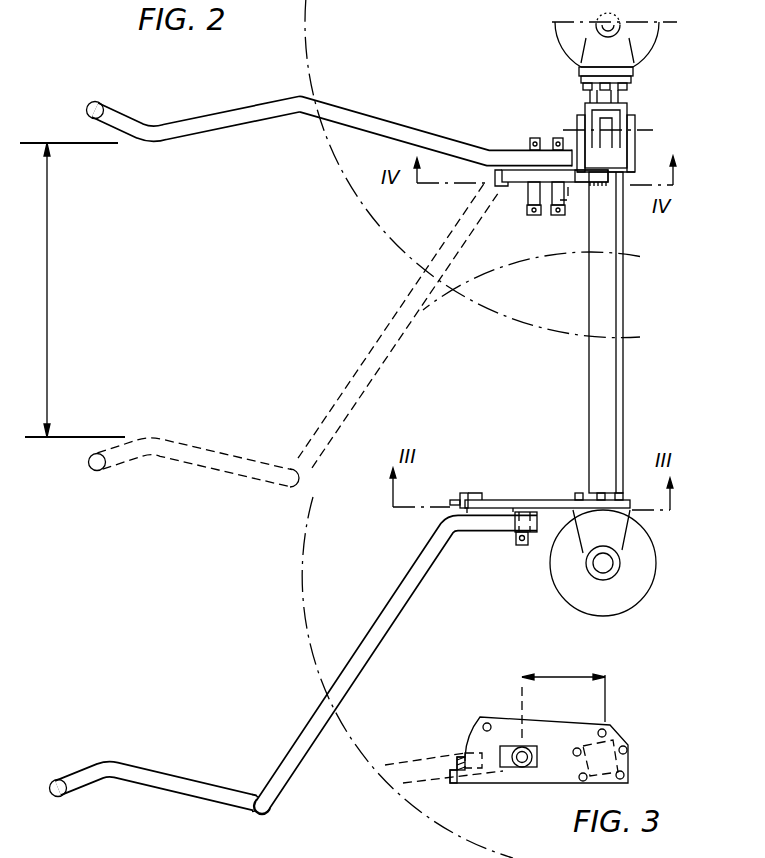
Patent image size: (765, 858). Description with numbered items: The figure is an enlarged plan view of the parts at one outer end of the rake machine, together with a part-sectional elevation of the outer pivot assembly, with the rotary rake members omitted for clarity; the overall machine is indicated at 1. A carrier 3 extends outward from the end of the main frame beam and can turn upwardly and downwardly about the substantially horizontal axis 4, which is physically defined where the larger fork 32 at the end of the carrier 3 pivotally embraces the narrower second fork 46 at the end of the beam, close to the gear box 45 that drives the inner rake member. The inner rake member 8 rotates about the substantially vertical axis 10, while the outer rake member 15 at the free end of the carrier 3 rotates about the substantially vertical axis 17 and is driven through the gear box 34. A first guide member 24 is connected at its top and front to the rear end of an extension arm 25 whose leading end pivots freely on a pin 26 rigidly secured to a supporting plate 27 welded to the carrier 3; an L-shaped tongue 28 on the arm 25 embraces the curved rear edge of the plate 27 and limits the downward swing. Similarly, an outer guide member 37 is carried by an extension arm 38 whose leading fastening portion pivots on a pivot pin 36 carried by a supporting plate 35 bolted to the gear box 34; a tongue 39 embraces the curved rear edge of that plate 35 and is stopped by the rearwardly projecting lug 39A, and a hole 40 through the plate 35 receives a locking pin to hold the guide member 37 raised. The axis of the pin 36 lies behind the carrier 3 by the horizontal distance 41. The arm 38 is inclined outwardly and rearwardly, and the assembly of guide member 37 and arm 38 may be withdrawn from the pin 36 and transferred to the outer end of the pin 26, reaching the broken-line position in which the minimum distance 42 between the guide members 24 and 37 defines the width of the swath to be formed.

In FIG. 2, the apparatus 1 is at (641, 377).
In FIG. 2, the carrier 3 is at (596, 392).
In FIG. 3, the carrier 3 is at (628, 740).
In FIG. 2, the substantially horizontal axis 4 is at (640, 131).
In FIG. 2, the rake member 8 is at (382, 238).
In FIG. 2, the substantially vertical axis 10 is at (608, 24).
In FIG. 2, the rake member 15 is at (308, 641).
In FIG. 2, the substantially vertical axis 17 is at (600, 566).
In FIG. 2, the first guide member 24 is at (200, 138).
In FIG. 2, the extension arm 25 is at (385, 118).
In FIG. 2, the pin 26 is at (556, 140).
In FIG. 2, the supporting plate 27 is at (583, 186).
In FIG. 2, the tongue 28 is at (502, 186).
In FIG. 2, the fork 32 is at (640, 157).
In FIG. 2, the gear box 34 is at (633, 605).
In FIG. 2, the supporting plate 35 is at (562, 500).
In FIG. 3, the supporting plate 35 is at (572, 728).
In FIG. 2, the pivot pin 36 is at (522, 545).
In FIG. 3, the pivot pin 36 is at (522, 770).
In FIG. 2, the outer guide member 37 is at (166, 778).
In FIG. 2, the extension arm 38 is at (306, 731).
In FIG. 3, the extension arm 38 is at (402, 766).
In FIG. 2, the tongue 39 is at (470, 493).
In FIG. 3, the tongue 39 is at (458, 757).
In FIG. 2, the lug 39A is at (450, 502).
In FIG. 3, the lug 39A is at (453, 784).
In FIG. 3, the hole 40 is at (487, 722).
In FIG. 3, the horizontal distance 41 is at (582, 676).
In FIG. 2, the minimum distance 42 is at (48, 302).
In FIG. 2, the gear box 45 is at (566, 50).
In FIG. 2, the second fork 46 is at (625, 108).